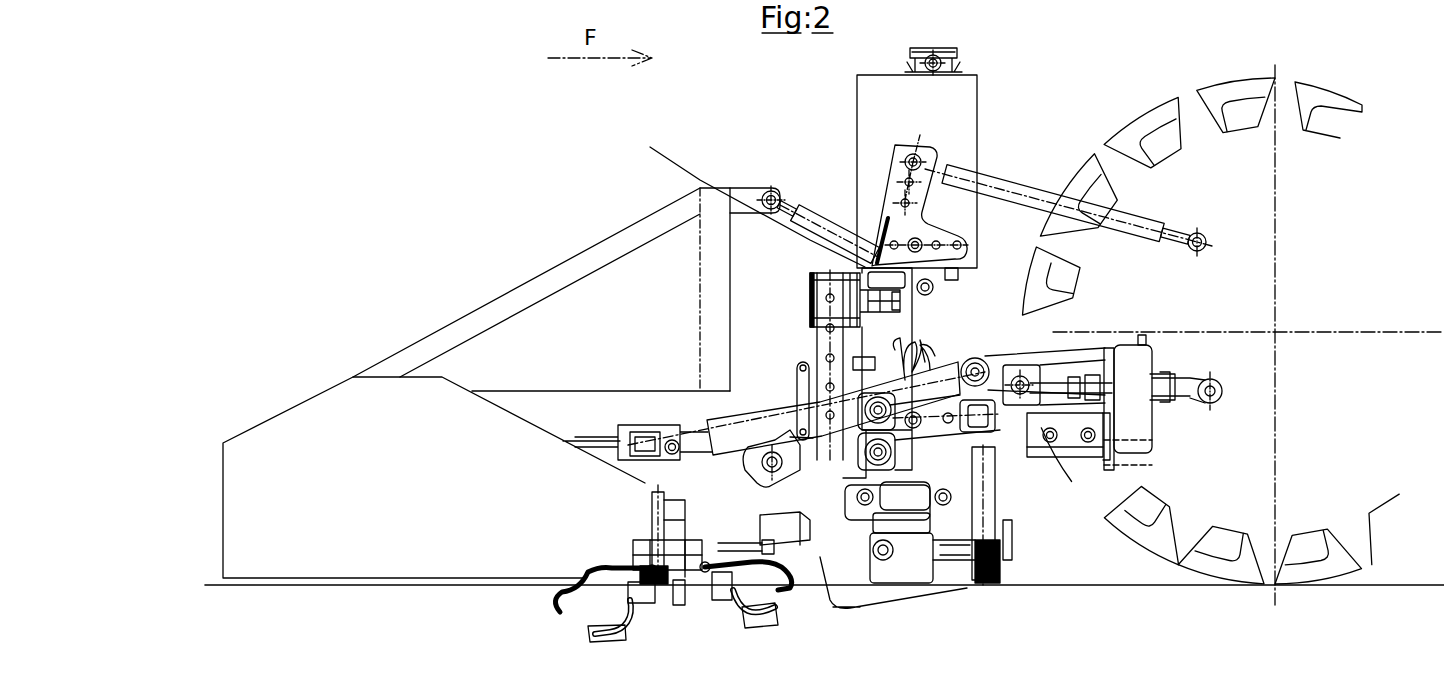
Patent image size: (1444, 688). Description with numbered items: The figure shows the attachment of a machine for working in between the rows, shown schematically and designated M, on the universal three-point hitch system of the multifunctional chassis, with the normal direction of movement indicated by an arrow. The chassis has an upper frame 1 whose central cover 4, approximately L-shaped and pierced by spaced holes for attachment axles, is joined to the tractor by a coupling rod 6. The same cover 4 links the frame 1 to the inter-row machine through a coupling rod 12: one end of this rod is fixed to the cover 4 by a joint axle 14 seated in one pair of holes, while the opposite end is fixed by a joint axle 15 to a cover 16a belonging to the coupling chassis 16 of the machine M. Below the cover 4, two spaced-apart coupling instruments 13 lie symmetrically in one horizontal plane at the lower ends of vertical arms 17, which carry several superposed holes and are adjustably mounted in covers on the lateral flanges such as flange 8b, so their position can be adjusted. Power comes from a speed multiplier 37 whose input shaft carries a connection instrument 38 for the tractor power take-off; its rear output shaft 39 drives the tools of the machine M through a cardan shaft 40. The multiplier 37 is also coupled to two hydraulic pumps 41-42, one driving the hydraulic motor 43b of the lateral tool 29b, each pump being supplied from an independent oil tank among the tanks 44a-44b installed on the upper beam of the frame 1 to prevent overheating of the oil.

The upper frame 1 is at (748, 195).
The cover 4 is at (933, 163).
The coupling rod 6 is at (1007, 183).
The lateral flange 8b is at (902, 315).
The coupling rod 12 is at (822, 207).
The coupling instruments 13 is at (767, 488).
The joint axle 14 is at (947, 237).
The joint axle 15 is at (770, 188).
The coupling chassis 16 is at (565, 273).
The cover 16a is at (743, 193).
The vertical arms 17 is at (823, 347).
The lateral tool 29b is at (606, 548).
The speed multiplier 37 is at (1143, 353).
The connection instrument 38 is at (1193, 375).
The output shaft 39 is at (1098, 385).
The cardan shaft 40 is at (722, 427).
The hydraulic pumps 41-42 is at (1060, 463).
The hydraulic motor 43b is at (652, 503).
The oil tanks 44a-44b is at (994, 100).
The machine for working in between the rows M is at (312, 413).